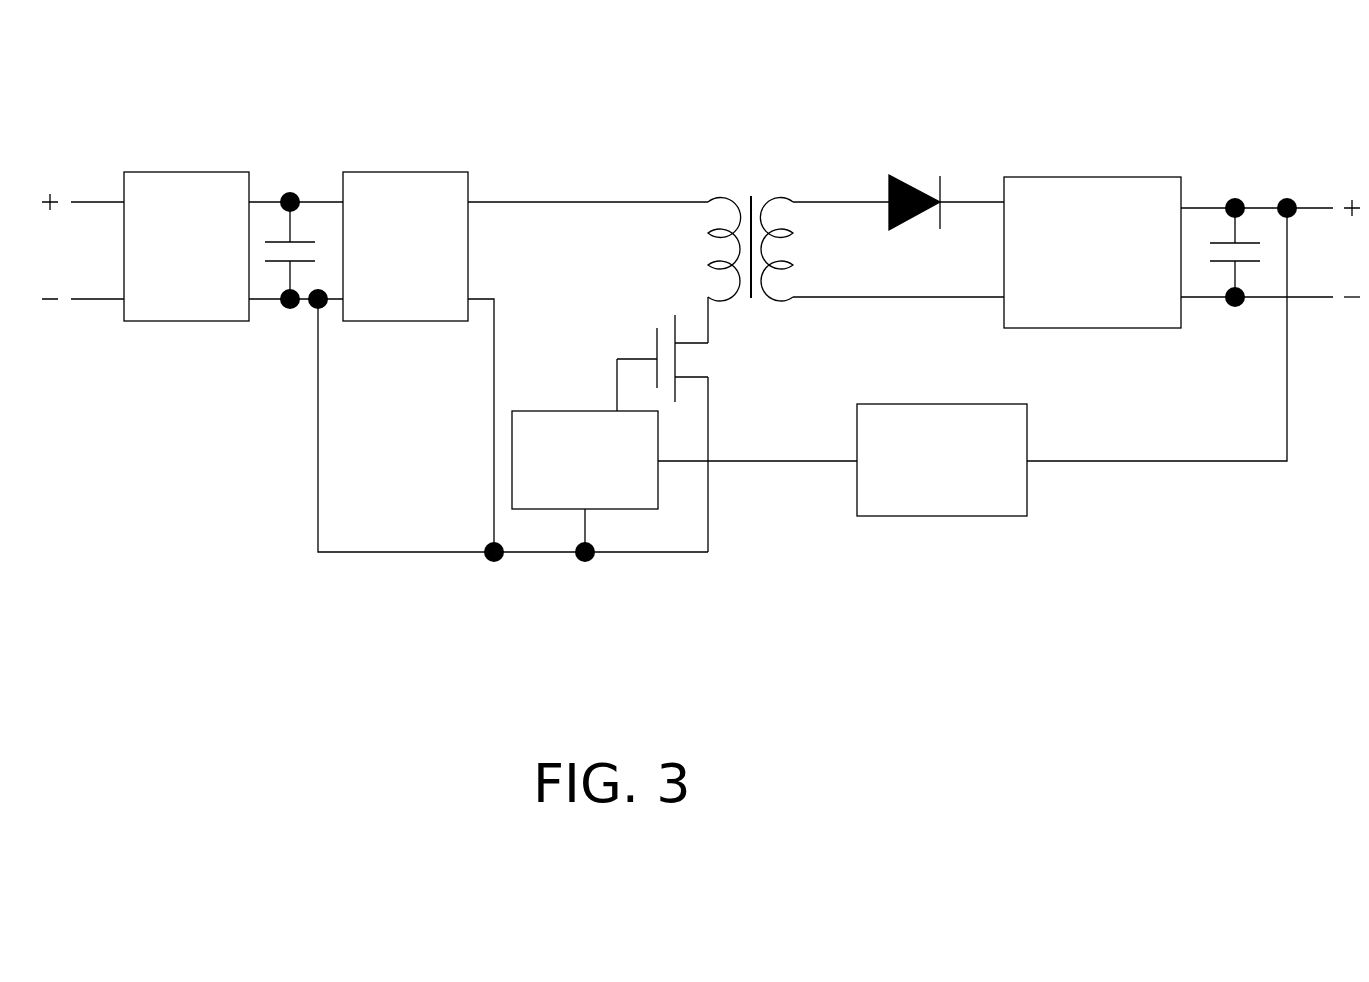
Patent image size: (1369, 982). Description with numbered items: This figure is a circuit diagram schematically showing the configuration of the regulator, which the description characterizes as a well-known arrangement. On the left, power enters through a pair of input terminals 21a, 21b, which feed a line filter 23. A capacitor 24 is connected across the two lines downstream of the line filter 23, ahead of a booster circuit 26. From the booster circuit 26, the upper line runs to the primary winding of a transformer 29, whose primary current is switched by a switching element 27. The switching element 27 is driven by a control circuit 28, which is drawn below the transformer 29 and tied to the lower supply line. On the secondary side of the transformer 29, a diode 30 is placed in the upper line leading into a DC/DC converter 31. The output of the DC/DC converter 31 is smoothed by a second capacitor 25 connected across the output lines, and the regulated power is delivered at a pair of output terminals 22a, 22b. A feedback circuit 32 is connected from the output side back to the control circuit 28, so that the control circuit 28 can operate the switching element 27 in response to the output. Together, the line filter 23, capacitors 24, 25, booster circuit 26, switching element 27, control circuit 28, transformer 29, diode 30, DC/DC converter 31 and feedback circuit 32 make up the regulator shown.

The input terminal 21a is at (93, 202).
The input terminal 21b is at (93, 299).
The output terminal 22a is at (1317, 208).
The output terminal 22b is at (1317, 297).
The line filter 23 is at (187, 172).
The capacitor 24 is at (306, 242).
The capacitor 25 is at (1250, 243).
The booster circuit 26 is at (423, 172).
The switching element 27 is at (677, 359).
The control circuit 28 is at (530, 411).
The transformer 29 is at (730, 202).
The diode 30 is at (893, 175).
The DC/DC converter 31 is at (1085, 177).
The feedback circuit 32 is at (943, 516).